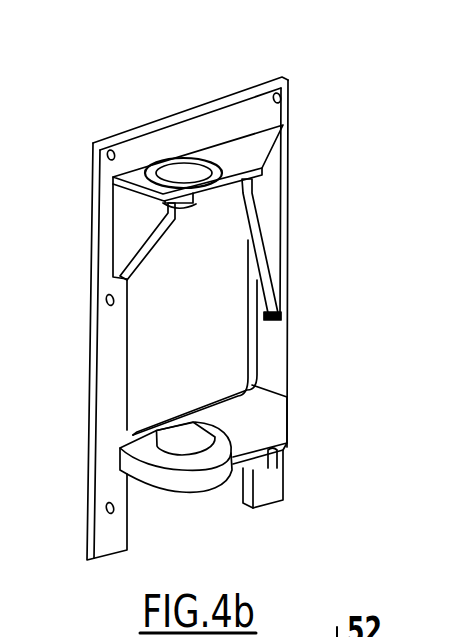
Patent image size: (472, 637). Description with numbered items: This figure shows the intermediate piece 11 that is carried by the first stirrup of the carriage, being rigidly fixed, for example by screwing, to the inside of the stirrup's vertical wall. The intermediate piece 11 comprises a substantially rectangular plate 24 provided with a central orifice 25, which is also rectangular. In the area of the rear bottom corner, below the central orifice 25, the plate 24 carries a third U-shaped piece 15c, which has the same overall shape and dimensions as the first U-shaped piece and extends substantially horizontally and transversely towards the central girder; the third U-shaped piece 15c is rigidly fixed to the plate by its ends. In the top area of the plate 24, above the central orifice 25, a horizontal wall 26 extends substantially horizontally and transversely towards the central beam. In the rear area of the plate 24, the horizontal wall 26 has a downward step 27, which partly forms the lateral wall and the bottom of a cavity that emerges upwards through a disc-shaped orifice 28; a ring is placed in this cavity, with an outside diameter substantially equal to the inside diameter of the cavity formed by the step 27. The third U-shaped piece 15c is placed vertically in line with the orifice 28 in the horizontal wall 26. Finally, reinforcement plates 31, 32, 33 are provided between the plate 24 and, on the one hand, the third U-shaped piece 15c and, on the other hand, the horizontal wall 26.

The intermediate piece 11 is at (221, 66).
The plate 24 is at (273, 348).
The central orifice 25 is at (157, 383).
The horizontal wall 26 is at (253, 145).
The downward step 27 is at (200, 203).
The orifice 28 is at (178, 175).
The reinforcement plate 31 is at (262, 195).
The reinforcement plate 32 is at (138, 220).
The reinforcement plate 33 is at (267, 417).
The third U-shaped piece 15c is at (186, 508).